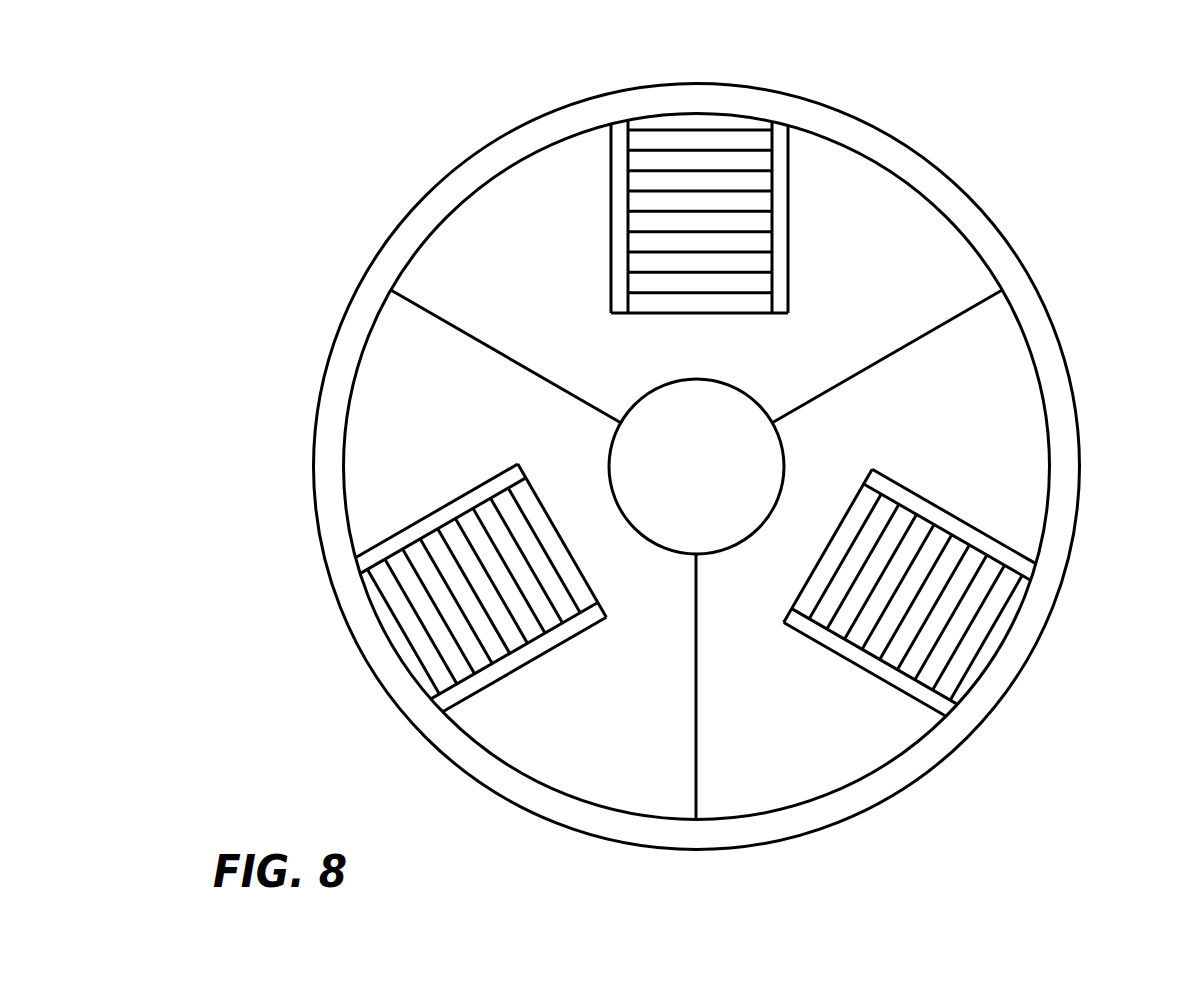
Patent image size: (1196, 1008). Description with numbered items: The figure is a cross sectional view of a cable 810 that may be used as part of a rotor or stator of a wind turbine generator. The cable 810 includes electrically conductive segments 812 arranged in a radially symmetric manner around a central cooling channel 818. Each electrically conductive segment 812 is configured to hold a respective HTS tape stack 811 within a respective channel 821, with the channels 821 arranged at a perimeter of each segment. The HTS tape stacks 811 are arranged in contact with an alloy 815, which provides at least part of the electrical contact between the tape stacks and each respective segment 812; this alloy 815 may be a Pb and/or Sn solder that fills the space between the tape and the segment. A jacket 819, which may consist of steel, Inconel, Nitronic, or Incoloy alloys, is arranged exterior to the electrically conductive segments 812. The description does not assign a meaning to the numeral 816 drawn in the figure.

The cable 810 is at (283, 105).
The HTS tape stacks 811 is at (690, 142).
The electrically conductive segments 812 is at (872, 208).
The alloy 815 is at (785, 177).
The support spoke 816 is at (960, 313).
The central cooling channel 818 is at (675, 480).
The jacket 819 is at (980, 230).
The channels 821 is at (678, 316).